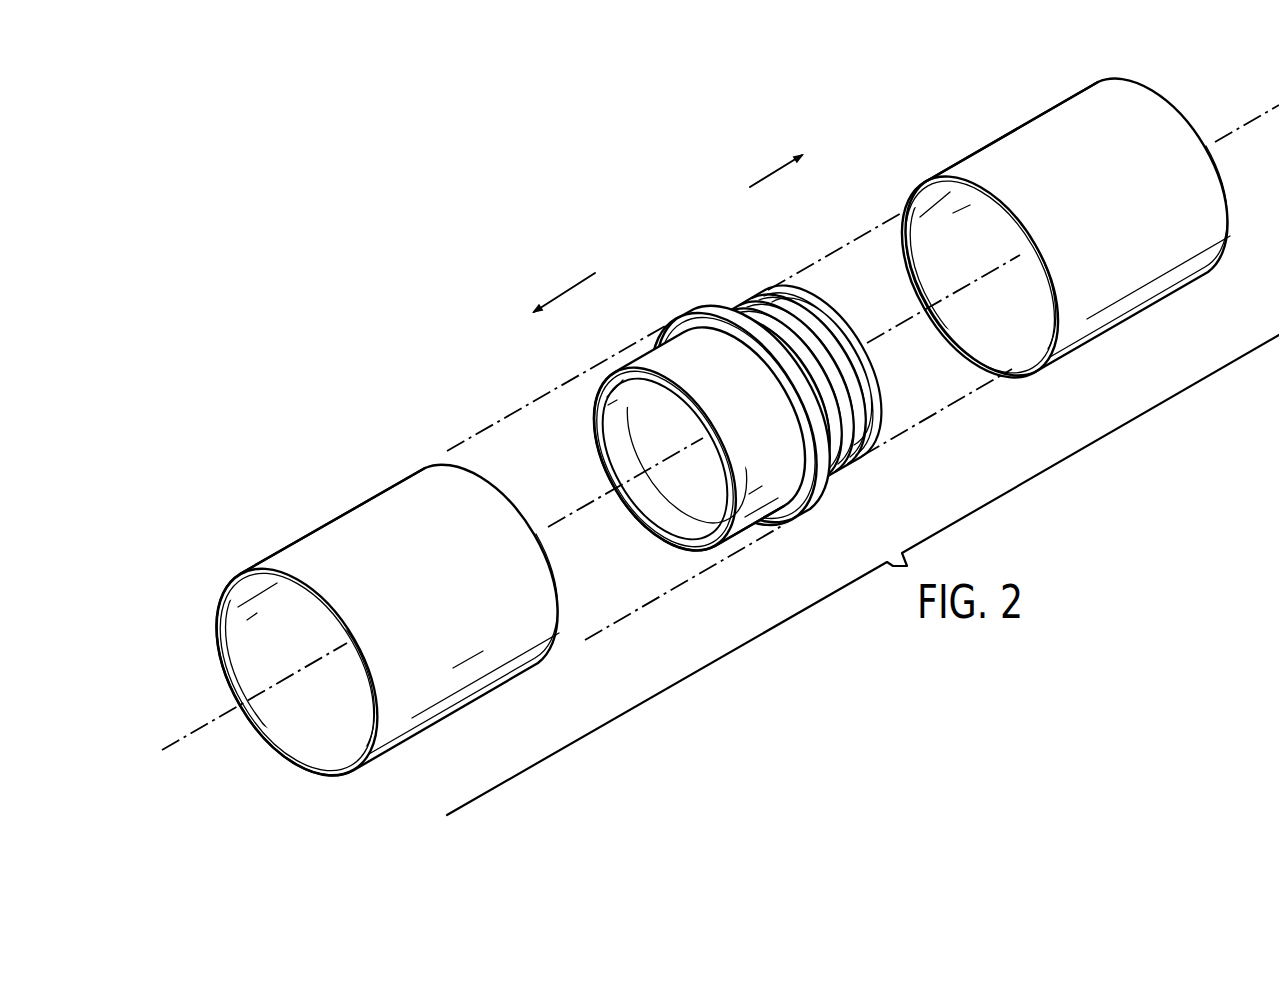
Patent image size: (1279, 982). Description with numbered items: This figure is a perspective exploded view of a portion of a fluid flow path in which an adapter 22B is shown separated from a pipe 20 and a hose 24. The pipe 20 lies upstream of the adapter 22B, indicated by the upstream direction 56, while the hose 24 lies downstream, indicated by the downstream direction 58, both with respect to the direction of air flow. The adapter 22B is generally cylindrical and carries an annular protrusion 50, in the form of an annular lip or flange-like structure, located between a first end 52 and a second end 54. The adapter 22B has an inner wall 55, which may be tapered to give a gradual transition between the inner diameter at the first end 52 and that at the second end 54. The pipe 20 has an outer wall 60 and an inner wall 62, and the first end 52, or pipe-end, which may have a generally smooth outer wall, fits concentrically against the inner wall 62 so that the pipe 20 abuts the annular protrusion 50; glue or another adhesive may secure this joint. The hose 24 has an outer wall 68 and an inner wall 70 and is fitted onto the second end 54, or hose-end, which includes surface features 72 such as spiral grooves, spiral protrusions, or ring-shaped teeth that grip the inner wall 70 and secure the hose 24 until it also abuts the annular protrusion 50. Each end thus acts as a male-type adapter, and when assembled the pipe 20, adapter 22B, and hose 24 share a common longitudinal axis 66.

The pipe 20 is at (364, 608).
The adapter 22B is at (798, 528).
The hose 24 is at (1049, 225).
The annular protrusion 50 is at (723, 386).
The first end 52 is at (633, 359).
The second end 54 is at (783, 346).
The inner wall 55 is at (678, 523).
The upstream direction 56 is at (562, 293).
The downstream direction 58 is at (783, 167).
The outer wall 60 is at (416, 488).
The inner wall 62 is at (257, 637).
The longitudinal axis 66 is at (199, 727).
The outer wall 68 is at (1079, 116).
The inner wall 70 is at (927, 225).
The surface features 72 is at (818, 318).